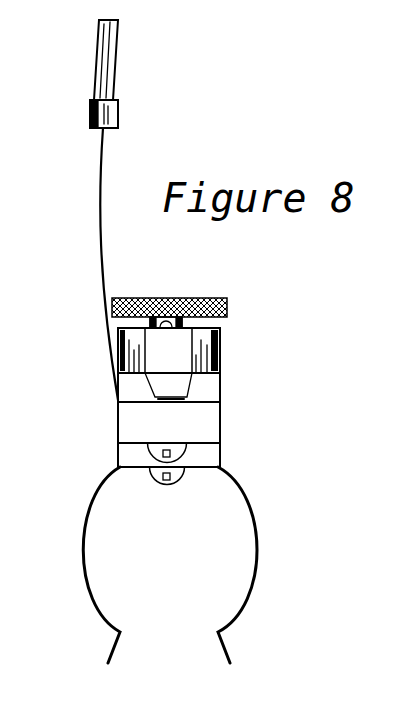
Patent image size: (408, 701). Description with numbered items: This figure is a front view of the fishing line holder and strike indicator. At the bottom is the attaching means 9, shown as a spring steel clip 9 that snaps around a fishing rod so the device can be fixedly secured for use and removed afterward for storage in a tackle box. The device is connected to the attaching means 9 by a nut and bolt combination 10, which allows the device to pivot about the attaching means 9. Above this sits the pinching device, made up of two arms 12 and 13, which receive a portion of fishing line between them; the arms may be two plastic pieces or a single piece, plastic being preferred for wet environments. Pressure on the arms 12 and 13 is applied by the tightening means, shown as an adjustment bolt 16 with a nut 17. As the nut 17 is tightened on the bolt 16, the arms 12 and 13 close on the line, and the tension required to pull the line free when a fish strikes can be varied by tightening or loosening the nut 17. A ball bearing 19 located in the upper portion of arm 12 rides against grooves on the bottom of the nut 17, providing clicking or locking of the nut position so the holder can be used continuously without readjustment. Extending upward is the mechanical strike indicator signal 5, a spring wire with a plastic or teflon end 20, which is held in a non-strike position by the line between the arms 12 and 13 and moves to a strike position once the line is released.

The plastic or teflon end 20 is at (104, 82).
The mechanical strike indicator signal 5 is at (100, 228).
The nut 17 is at (215, 298).
The ball bearing 19 is at (180, 322).
The arm 12 is at (175, 358).
The arm 13 is at (188, 423).
The adjustment bolt 16 is at (177, 450).
The nut and bolt combination 10 is at (160, 480).
The attaching means 9 is at (257, 562).